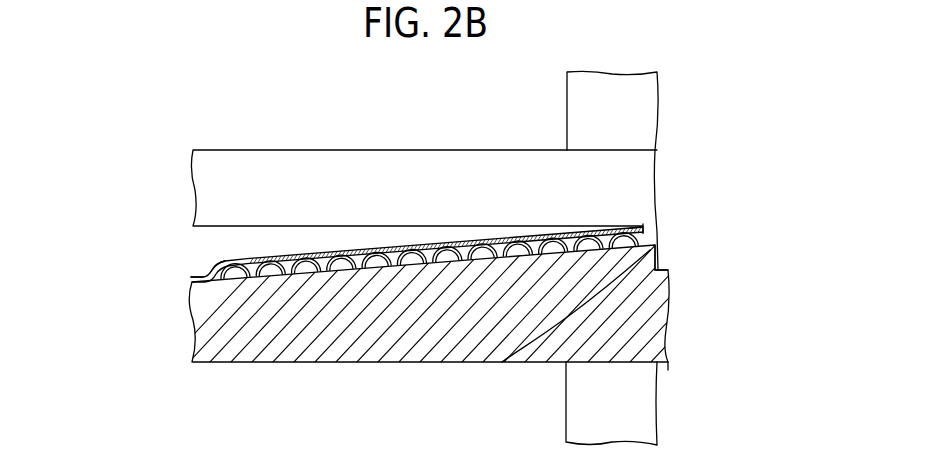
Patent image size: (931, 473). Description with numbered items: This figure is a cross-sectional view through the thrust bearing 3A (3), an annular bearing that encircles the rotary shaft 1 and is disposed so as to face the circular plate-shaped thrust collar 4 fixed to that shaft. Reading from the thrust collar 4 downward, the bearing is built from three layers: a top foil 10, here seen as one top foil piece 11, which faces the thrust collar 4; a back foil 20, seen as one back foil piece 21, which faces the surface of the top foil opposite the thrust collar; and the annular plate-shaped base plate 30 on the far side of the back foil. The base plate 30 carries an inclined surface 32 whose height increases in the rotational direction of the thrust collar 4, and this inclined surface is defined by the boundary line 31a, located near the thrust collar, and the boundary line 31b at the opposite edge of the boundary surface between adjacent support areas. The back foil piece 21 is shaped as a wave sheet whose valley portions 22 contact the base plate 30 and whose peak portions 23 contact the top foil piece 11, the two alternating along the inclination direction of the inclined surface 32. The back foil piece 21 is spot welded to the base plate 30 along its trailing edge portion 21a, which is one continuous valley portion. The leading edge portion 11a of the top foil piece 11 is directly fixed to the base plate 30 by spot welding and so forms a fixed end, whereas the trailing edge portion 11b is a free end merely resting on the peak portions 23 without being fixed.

The rotary shaft 1 is at (567, 88).
The thrust bearing 3A is at (384, 255).
The thrust bearing 3 is at (384, 255).
The thrust collar 4 is at (510, 160).
The top foil 10 is at (415, 232).
The top foil piece 11 is at (250, 258).
The edge portion (leading edge) 11a is at (195, 273).
The edge portion (trailing edge) 11b is at (645, 225).
The back foil 20 is at (488, 180).
The back foil piece 21 is at (390, 250).
The edge portion 21a is at (650, 234).
The valley portion 22 is at (503, 242).
The peak portion 23 is at (512, 238).
The base plate 30 is at (228, 337).
The boundary line (second boundary line) 31a is at (657, 243).
The boundary line (first boundary line) 31b is at (664, 278).
The inclined surface 32 is at (371, 258).